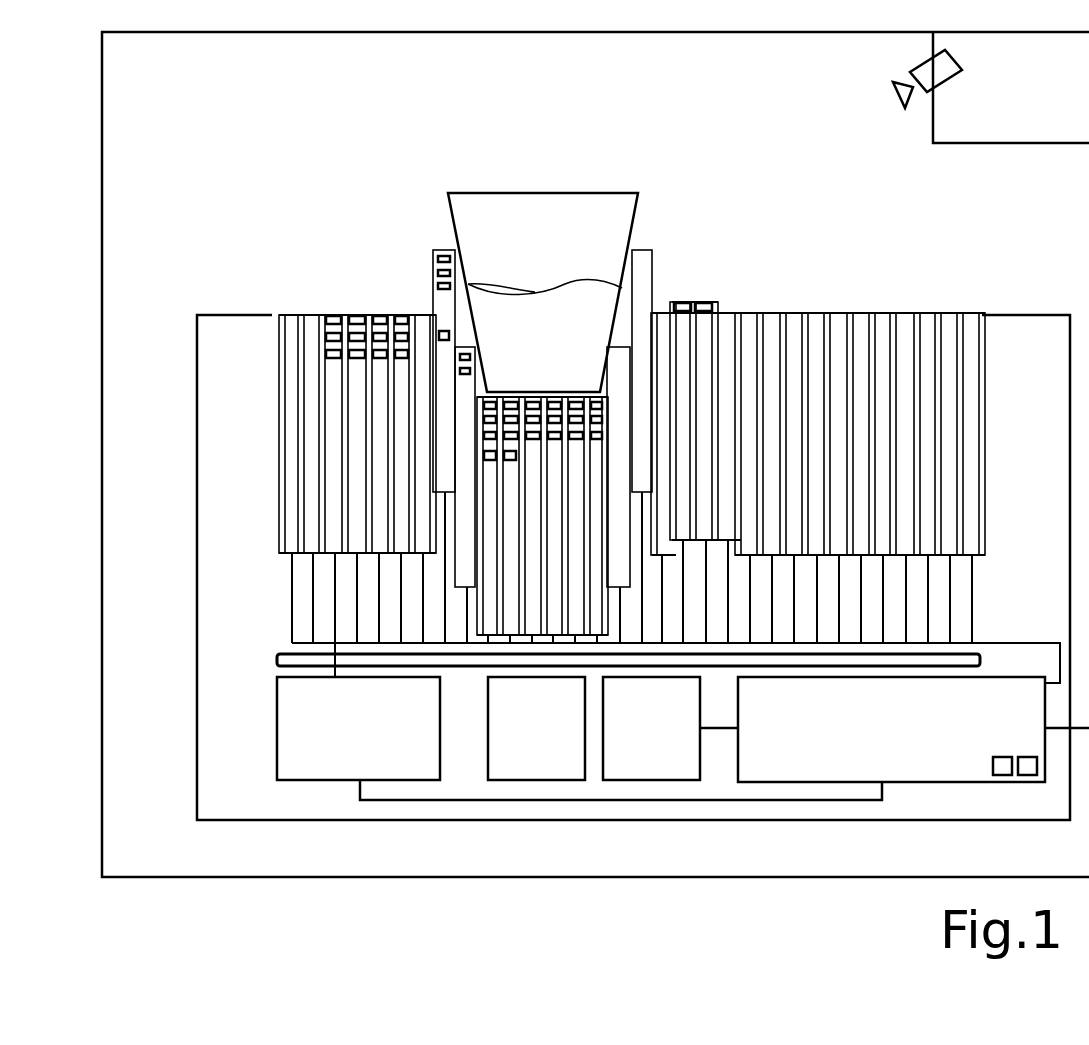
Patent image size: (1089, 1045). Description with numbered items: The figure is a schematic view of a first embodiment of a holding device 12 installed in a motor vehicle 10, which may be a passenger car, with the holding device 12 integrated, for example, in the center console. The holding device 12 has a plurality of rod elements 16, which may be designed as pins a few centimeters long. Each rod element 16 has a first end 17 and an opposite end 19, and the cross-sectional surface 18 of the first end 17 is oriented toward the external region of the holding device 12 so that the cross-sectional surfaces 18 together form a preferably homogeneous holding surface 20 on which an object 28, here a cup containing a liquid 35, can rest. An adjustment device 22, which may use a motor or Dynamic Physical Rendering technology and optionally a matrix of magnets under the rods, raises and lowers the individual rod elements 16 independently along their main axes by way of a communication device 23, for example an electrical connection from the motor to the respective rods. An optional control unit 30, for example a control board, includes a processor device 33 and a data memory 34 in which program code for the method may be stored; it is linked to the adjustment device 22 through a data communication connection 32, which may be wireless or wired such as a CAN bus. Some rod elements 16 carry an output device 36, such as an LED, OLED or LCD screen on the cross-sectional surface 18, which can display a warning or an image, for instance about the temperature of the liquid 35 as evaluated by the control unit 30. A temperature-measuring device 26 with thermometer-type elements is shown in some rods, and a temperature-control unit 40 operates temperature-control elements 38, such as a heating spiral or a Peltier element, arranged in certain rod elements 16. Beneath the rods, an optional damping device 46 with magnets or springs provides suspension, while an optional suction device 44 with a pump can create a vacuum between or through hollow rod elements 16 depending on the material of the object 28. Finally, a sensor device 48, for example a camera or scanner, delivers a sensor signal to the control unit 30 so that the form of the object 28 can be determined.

The motor vehicle 10 is at (102, 397).
The holding device 12 is at (197, 527).
The rod elements 16 is at (282, 412).
The first end 17 is at (983, 313).
The cross-sectional surface 18 is at (905, 311).
The opposite end 19 is at (982, 553).
The holding surface 20 is at (828, 265).
The adjustment device 22 is at (330, 780).
The communication device 23 is at (290, 610).
The temperature-measuring device 26 is at (462, 376).
The object 28 is at (583, 192).
The control unit 30 is at (945, 782).
The data communication connection 32 is at (720, 728).
The processor device 33 is at (1002, 775).
The data memory 34 is at (1027, 775).
The liquid 35 is at (562, 351).
The output device 36 is at (333, 313).
The temperature-control element 38 is at (330, 337).
The temperature-control unit 40 is at (530, 780).
The suction device 44 is at (640, 780).
The damping device 46 is at (277, 660).
The sensor device 48 is at (958, 62).